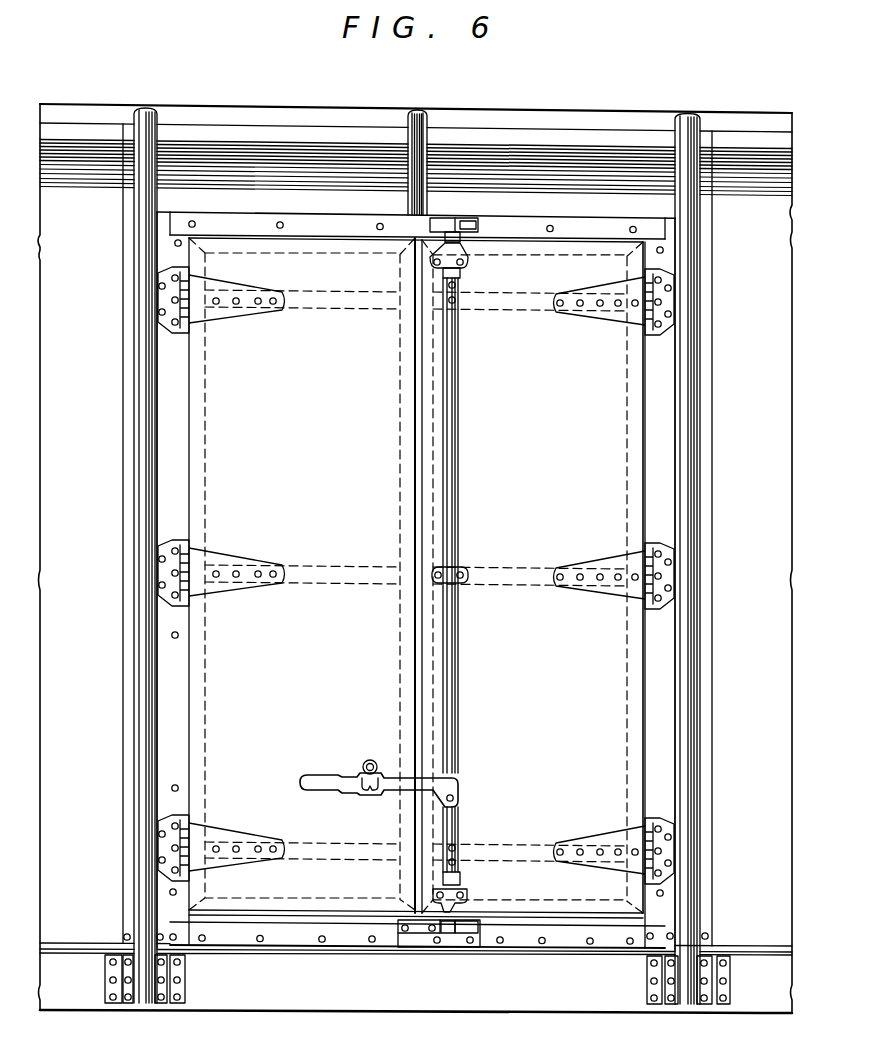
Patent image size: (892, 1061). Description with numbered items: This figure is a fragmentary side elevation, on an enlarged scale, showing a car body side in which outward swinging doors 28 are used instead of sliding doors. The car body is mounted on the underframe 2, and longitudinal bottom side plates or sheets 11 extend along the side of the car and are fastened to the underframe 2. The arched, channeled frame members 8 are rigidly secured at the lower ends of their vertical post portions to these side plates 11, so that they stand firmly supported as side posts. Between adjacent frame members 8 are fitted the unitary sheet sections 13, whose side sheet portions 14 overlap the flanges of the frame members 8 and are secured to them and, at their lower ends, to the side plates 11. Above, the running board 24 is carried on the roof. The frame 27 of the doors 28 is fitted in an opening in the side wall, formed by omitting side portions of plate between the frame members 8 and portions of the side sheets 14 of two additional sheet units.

The car body underframe 2 is at (363, 1000).
The frame members 8 is at (150, 398).
The longitudinal plates or sheets 11 is at (92, 1004).
The unitary sheet sections 13 is at (416, 534).
The side sheet portions 14 is at (415, 558).
The running board 24 is at (319, 98).
The door frame 27 is at (659, 398).
The swinging doors 28 is at (416, 582).